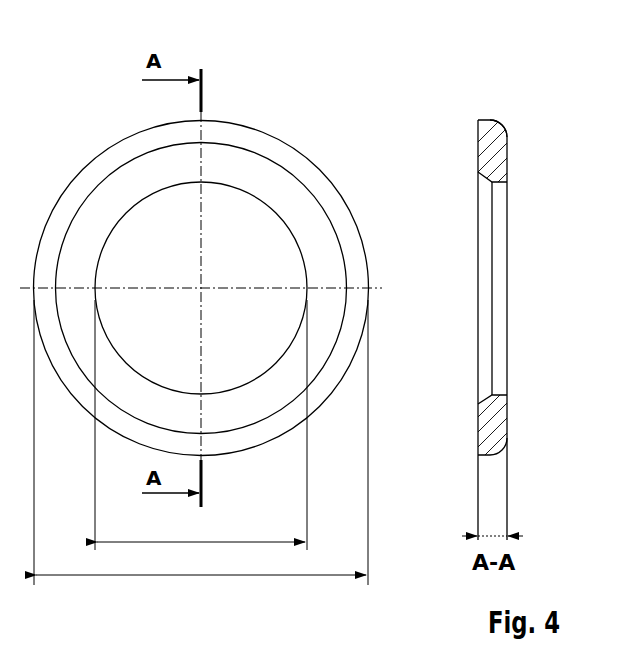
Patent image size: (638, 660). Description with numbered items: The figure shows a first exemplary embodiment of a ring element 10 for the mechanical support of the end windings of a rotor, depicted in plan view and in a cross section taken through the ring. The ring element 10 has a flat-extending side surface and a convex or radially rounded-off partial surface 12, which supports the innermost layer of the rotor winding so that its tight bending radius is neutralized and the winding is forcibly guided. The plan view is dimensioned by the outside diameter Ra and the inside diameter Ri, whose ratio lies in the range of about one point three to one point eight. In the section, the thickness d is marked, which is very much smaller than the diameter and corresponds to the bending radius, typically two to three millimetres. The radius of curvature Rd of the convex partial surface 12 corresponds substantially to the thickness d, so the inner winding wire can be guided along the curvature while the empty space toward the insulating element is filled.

The ring element 10 is at (271, 100).
The convex partial surface 12 is at (357, 258).
The inside diameter Ri is at (201, 425).
The outside diameter Ra is at (201, 442).
The radius of curvature Rd is at (499, 125).
The thickness d is at (492, 526).